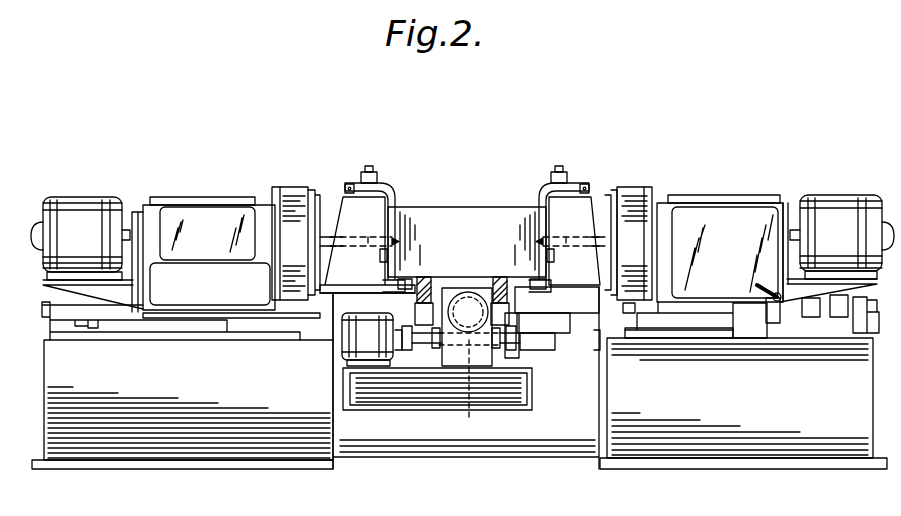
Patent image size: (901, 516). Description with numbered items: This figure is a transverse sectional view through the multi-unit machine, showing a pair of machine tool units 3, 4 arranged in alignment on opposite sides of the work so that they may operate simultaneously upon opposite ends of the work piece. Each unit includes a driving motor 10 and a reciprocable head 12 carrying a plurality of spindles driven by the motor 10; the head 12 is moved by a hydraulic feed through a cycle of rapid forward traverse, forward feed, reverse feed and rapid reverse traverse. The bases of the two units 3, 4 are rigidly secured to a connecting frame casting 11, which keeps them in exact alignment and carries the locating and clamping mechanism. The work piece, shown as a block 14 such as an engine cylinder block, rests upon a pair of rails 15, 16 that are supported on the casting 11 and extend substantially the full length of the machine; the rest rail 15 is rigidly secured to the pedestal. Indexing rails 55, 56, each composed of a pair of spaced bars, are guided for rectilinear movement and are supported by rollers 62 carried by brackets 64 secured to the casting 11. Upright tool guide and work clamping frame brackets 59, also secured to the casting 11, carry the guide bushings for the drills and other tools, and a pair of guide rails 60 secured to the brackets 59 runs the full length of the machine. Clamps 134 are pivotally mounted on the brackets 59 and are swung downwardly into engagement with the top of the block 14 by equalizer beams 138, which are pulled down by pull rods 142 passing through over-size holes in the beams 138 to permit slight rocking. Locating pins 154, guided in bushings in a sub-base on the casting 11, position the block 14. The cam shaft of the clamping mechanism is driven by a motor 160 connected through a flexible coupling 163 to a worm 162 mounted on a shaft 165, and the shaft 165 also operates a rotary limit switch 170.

The machine tool unit 3 is at (787, 391).
The machine tool unit 4 is at (231, 391).
The driving motor 10 is at (92, 256).
The connecting frame casting 11 is at (578, 308).
The reciprocable head 12 is at (298, 261).
The block 14 is at (478, 241).
The rest rail 15 is at (556, 266).
The rail 16 is at (412, 294).
The indexing rail 55 is at (496, 282).
The indexing rail 56 is at (441, 282).
The frame bracket 59 is at (350, 215).
The guide rail 60 is at (378, 256).
The roller 62 is at (413, 317).
The bracket 64 is at (367, 339).
The clamp 134 is at (396, 198).
The equalizer beam 138 is at (376, 174).
The pull rod 142 is at (585, 190).
The locating pin 154 is at (270, 286).
The motor 160 is at (372, 356).
The worm 162 is at (471, 366).
The flexible coupling 163 is at (418, 352).
The shaft 165 is at (512, 352).
The rotary limit switch 170 is at (555, 340).